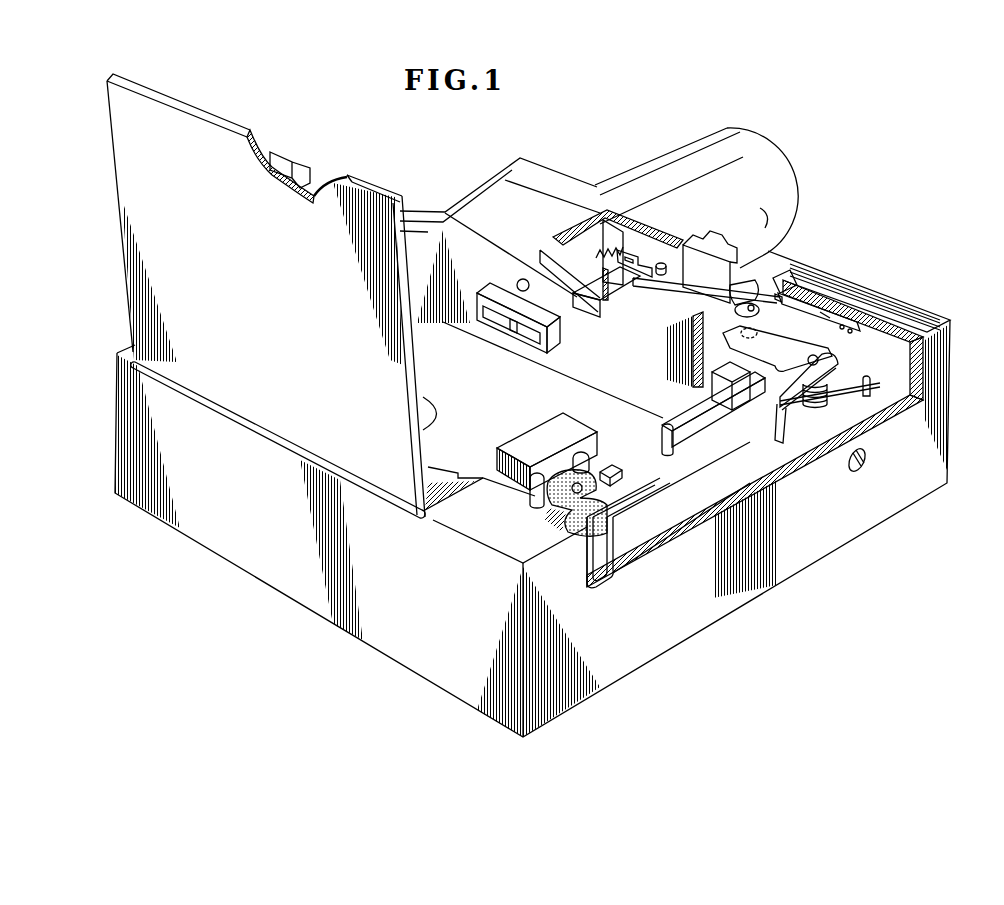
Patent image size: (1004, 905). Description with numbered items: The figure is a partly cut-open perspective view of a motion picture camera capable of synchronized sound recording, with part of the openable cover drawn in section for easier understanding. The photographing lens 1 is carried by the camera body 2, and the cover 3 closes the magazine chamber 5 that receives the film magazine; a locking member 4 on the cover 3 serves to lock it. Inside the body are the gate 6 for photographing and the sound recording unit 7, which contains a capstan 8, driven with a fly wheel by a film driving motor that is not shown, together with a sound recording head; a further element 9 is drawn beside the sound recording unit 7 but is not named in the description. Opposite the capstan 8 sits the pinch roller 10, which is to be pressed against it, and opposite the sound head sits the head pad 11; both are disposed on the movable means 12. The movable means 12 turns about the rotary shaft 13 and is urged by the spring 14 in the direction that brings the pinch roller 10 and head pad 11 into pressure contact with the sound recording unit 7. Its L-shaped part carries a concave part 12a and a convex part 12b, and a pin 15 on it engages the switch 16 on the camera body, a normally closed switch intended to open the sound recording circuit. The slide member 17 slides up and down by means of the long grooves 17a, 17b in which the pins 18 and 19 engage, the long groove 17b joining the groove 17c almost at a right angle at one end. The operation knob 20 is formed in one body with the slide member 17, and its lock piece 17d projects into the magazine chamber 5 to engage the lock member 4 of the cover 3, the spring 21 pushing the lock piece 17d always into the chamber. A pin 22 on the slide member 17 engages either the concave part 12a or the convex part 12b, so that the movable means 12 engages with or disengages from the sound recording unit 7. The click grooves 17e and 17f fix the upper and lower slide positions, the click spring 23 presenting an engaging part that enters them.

The photographing lens 1 is at (665, 160).
The camera body 2 is at (920, 478).
The cover for the magazine chamber 3 is at (222, 140).
The locking member 4 is at (300, 160).
The magazine chamber 5 is at (416, 220).
The gate 6 is at (527, 332).
The sound recording unit 7 is at (518, 443).
The capstan 8 is at (507, 497).
The pin 9 is at (580, 455).
The pinch roller 10 is at (553, 495).
The head pad 11 is at (610, 470).
The movable means 12 is at (637, 525).
The concave part 12a is at (773, 348).
The convex part 12b is at (822, 313).
The rotary shaft 13 is at (838, 356).
The spring 14 is at (862, 389).
The pin 15 is at (667, 455).
The switch 16 is at (690, 432).
The slide member 17 is at (603, 213).
The long groove 17a is at (748, 292).
The long groove 17b is at (638, 255).
The long groove 17c is at (633, 285).
The lock piece 17d is at (597, 310).
The click groove 17e is at (780, 280).
The click groove 17f is at (765, 208).
The pin 18 is at (750, 292).
The pin 19 is at (663, 263).
The operation knob 20 is at (703, 243).
The spring 21 is at (597, 252).
The pin 22 is at (778, 297).
The click spring 23 is at (825, 317).